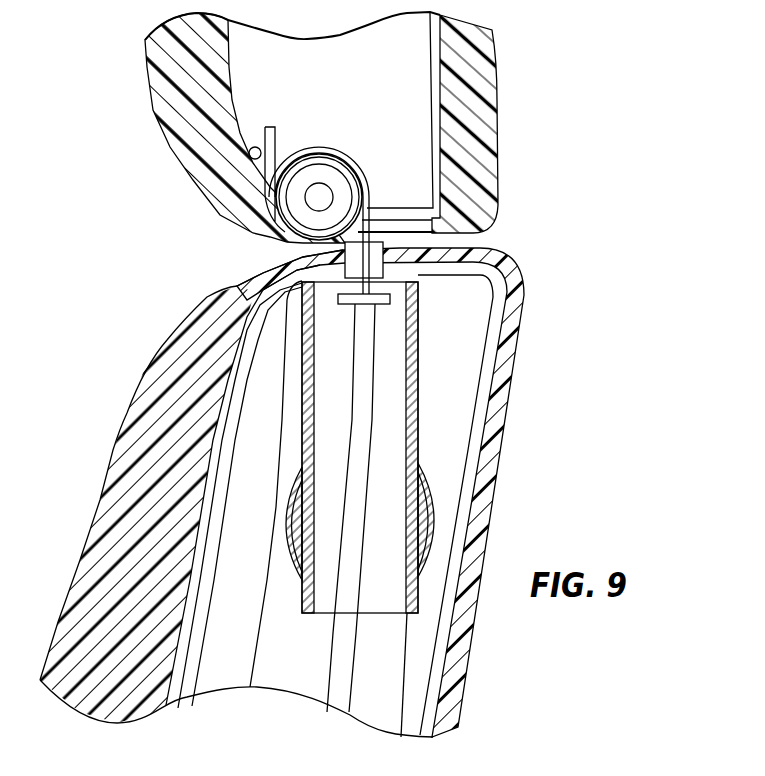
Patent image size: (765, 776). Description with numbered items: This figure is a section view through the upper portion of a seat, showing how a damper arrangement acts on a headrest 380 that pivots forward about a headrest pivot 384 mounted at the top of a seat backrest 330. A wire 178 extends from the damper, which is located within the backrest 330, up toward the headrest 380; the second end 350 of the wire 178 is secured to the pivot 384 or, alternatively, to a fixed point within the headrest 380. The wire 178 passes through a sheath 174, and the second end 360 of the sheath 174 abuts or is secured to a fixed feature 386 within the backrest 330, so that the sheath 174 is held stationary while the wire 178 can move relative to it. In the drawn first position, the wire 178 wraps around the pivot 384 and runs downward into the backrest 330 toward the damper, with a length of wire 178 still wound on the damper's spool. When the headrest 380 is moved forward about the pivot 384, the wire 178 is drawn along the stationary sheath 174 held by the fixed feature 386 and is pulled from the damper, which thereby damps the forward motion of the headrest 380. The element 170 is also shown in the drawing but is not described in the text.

The cable 170 is at (376, 410).
The sheath 174 is at (376, 495).
The wire 178 is at (341, 156).
The seat backrest 330 is at (527, 288).
The second end of the wire 350 is at (279, 149).
The second end of the sheath 360 is at (380, 304).
The headrest 380 is at (498, 156).
The headrest pivot 384 is at (312, 200).
The fixed feature 386 is at (338, 300).